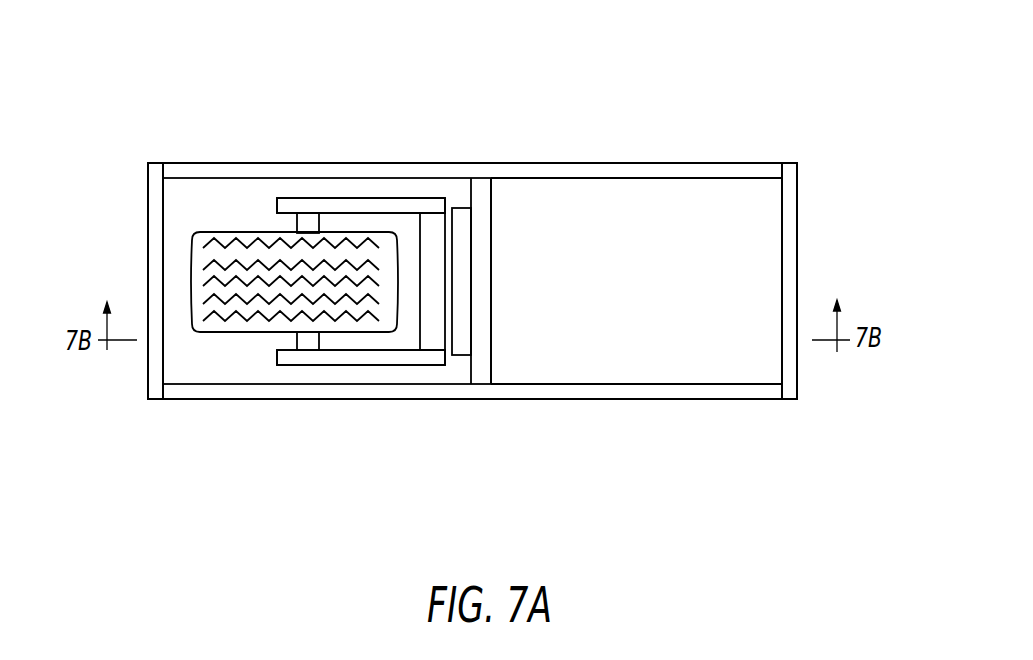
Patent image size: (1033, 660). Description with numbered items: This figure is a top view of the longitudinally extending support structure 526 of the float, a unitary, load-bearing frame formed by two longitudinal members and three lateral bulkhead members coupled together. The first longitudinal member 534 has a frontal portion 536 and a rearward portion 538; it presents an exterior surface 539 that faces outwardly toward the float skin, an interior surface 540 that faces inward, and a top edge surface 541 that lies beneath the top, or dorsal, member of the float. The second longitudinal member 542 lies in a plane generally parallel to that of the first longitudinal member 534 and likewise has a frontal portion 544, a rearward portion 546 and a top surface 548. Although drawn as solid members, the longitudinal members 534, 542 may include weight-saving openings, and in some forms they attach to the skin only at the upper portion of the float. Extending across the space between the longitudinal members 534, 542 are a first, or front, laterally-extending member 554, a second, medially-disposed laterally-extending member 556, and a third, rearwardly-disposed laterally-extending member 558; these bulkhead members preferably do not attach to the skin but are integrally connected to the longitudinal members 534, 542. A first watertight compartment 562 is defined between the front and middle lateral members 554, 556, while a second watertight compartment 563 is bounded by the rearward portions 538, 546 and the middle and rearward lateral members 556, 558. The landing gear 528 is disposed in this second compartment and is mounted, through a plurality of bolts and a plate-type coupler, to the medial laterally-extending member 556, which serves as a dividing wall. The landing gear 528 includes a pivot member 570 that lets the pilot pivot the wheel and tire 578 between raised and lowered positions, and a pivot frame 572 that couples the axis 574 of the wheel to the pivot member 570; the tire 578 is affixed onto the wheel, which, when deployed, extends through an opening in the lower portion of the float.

The longitudinally extending support structure 526 is at (828, 150).
The landing gear 528 is at (160, 232).
The first longitudinal member 534 is at (603, 105).
The frontal portion 536 is at (649, 148).
The rearward portion 538 is at (365, 140).
The exterior surface 539 is at (517, 166).
The interior surface 540 is at (603, 180).
The top edge surface 541 is at (690, 173).
The second longitudinal member 542 is at (498, 430).
The frontal portion 544 is at (673, 422).
The rearward portion 546 is at (327, 420).
The top surface 548 is at (590, 390).
The first laterally-extending member 554 is at (793, 297).
The second laterally-extending member 556 is at (490, 308).
The third laterally-extending member 558 is at (136, 377).
The first watertight compartment 562 is at (711, 293).
The first chamber 563 is at (190, 200).
The pivot member 570 is at (437, 230).
The pivot frame 572 is at (340, 203).
The axis 574 is at (297, 333).
The tire 578 is at (228, 243).